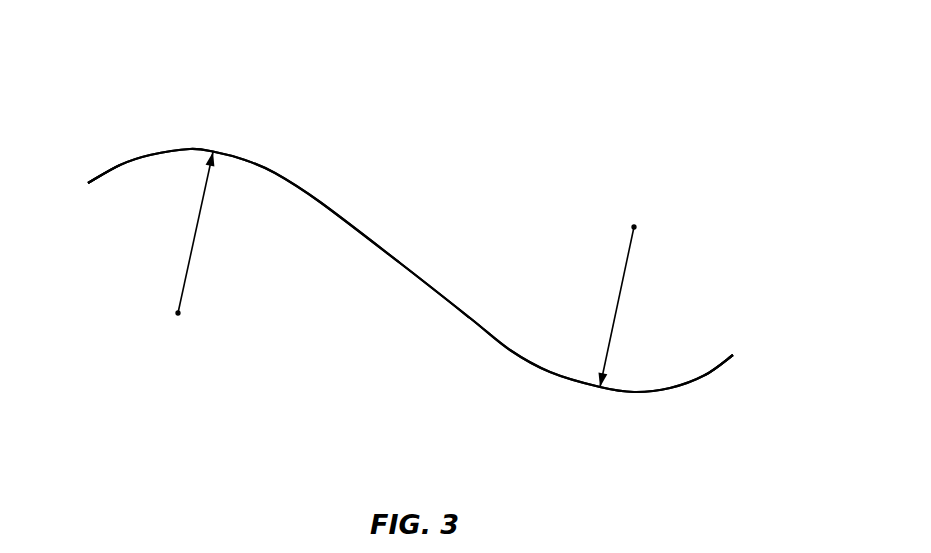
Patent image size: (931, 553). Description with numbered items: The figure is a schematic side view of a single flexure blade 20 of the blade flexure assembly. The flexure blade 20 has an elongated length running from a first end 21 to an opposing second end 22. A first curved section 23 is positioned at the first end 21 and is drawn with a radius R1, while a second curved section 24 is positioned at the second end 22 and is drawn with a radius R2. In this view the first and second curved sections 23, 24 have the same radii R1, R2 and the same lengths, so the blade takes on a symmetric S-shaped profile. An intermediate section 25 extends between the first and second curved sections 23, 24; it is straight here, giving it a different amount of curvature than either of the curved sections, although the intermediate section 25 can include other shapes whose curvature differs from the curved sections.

The flexure blade 20 is at (607, 93).
The first end 21 is at (88, 185).
The second end 22 is at (723, 365).
The first curved section 23 is at (148, 122).
The second curved section 24 is at (610, 430).
The intermediate section 25 is at (402, 263).
The radius R1 is at (192, 253).
The radius R2 is at (620, 295).